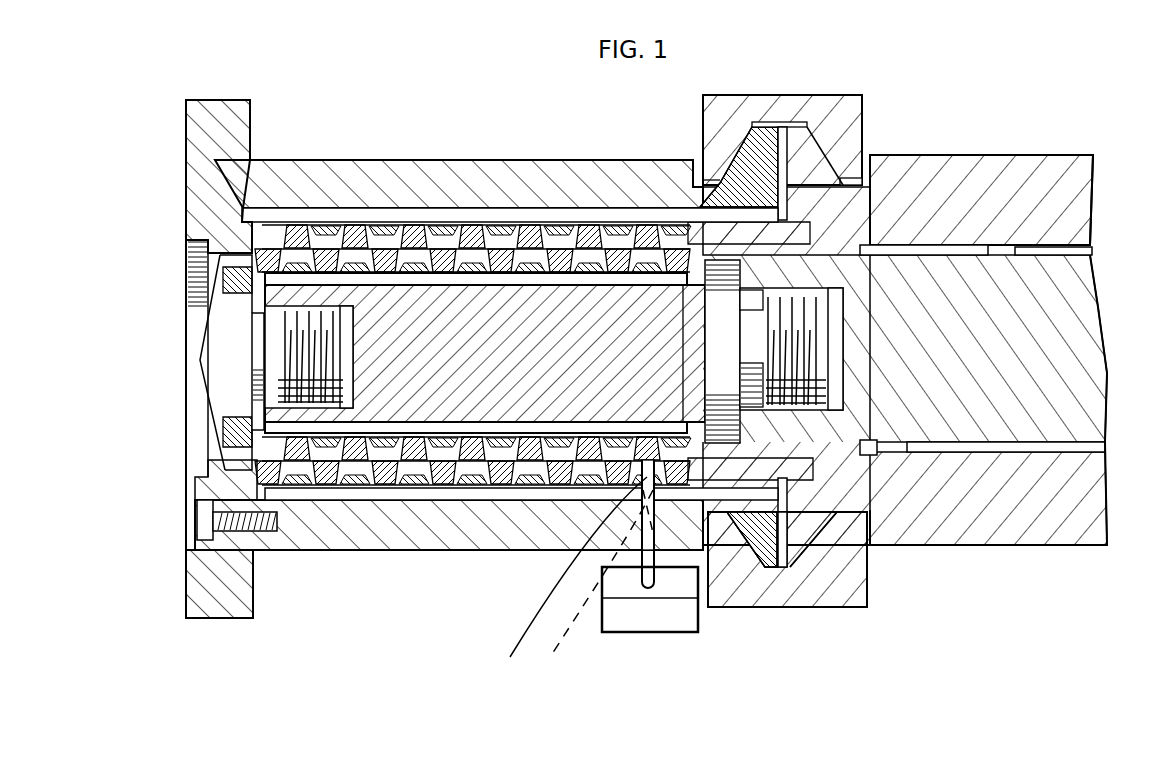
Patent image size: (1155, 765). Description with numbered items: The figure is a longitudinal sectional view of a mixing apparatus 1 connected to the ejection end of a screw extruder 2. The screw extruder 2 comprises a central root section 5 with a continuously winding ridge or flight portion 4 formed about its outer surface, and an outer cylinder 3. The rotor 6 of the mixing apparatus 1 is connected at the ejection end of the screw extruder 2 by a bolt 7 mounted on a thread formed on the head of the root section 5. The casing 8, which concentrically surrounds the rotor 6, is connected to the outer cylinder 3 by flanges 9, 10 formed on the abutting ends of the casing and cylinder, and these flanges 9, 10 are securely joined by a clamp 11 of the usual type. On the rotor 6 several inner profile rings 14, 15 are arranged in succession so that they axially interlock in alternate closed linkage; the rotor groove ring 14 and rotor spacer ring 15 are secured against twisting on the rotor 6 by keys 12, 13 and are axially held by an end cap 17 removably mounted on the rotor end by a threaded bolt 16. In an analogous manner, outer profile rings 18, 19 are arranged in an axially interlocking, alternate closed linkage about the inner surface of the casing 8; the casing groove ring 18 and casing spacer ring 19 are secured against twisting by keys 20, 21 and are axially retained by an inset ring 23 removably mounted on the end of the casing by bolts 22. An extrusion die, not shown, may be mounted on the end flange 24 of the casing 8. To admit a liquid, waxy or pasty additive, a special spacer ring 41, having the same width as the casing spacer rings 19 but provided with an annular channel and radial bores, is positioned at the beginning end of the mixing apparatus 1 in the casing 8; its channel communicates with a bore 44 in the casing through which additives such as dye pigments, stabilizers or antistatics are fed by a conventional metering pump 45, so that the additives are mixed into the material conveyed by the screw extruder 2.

The mixing apparatus 1 is at (469, 135).
The screw extruder 2 is at (950, 128).
The outer cylinder 3 is at (999, 240).
The ridge or flight portion 4 is at (1008, 247).
The central root section 5 is at (1072, 325).
The rotor 6 is at (396, 395).
The bolt 7 is at (823, 407).
The casing 8 is at (438, 527).
The flange 9 is at (763, 553).
The flange 10 is at (812, 553).
The clamp 11 is at (819, 107).
The key 12 is at (327, 250).
The key 13 is at (360, 434).
The inner profile ring (rotor groove ring) 14 is at (531, 248).
The inner profile ring (rotor spacer ring) 15 is at (498, 253).
The threaded bolt 16 is at (241, 368).
The end cap 17 is at (228, 313).
The outer profile ring (casing groove ring) 18 is at (352, 262).
The outer profile ring (casing spacer ring) 19 is at (347, 234).
The key 20 is at (287, 218).
The key 21 is at (315, 497).
The bolt 22 is at (200, 517).
The inset ring 23 is at (184, 200).
The end flange 24 is at (207, 583).
The special spacer ring 41 is at (568, 584).
The bore 44 is at (595, 591).
The metering pump 45 is at (662, 615).